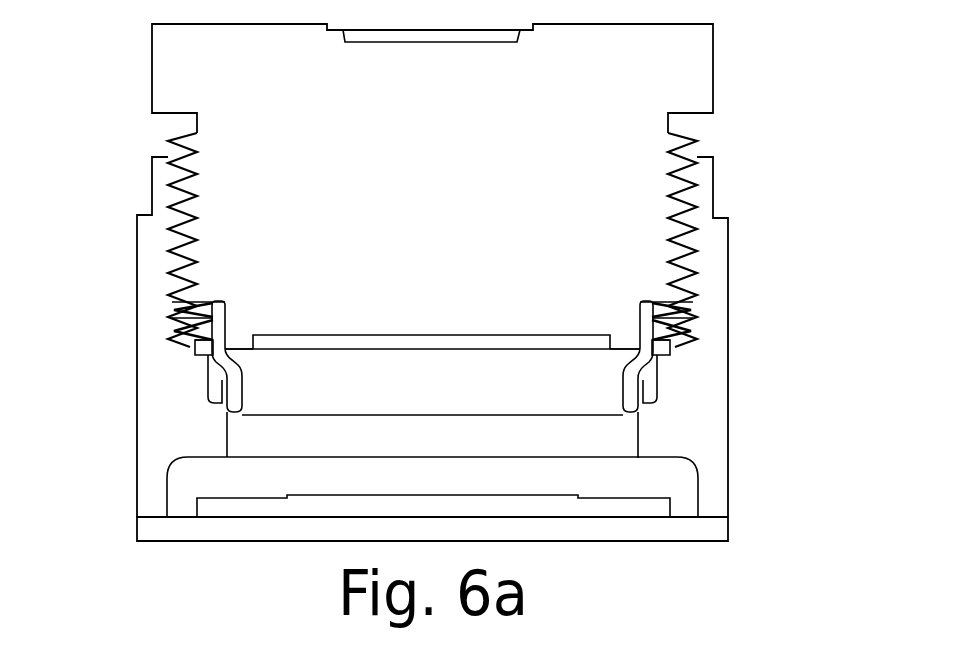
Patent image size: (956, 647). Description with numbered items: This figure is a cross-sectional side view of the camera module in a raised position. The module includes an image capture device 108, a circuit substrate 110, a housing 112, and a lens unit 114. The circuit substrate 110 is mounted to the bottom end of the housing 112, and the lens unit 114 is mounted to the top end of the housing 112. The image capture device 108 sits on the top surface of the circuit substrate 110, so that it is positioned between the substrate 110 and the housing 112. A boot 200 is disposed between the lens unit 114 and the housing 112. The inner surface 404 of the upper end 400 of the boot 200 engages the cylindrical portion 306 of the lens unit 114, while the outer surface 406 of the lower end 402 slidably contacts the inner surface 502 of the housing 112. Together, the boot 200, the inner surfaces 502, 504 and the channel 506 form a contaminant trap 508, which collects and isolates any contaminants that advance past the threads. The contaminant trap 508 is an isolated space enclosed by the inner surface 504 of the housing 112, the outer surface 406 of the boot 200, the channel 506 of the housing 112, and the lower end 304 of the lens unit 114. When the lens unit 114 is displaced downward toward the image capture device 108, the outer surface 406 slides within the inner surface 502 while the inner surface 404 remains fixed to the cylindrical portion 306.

The image capture device 108 is at (268, 513).
The circuit substrate 110 is at (198, 537).
The housing 112 is at (160, 240).
The lens unit 114 is at (688, 78).
The boot 200 is at (520, 378).
The lower end 304 is at (665, 300).
The cylindrical portion 306 is at (638, 340).
The upper end 400 is at (225, 303).
The lower end 402 is at (233, 408).
The inner surface 404 is at (227, 336).
The outer surface 406 is at (655, 363).
The inner surface 502 is at (227, 438).
The inner surface 504 is at (210, 394).
The channel 506 is at (645, 398).
The contaminant trap 508 is at (218, 372).